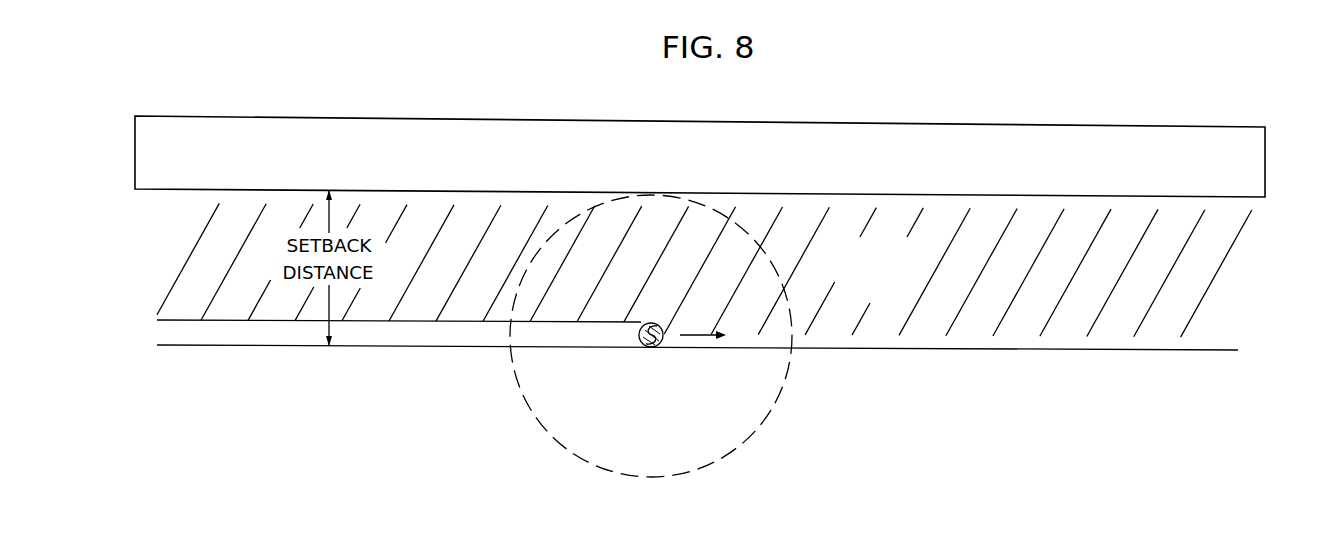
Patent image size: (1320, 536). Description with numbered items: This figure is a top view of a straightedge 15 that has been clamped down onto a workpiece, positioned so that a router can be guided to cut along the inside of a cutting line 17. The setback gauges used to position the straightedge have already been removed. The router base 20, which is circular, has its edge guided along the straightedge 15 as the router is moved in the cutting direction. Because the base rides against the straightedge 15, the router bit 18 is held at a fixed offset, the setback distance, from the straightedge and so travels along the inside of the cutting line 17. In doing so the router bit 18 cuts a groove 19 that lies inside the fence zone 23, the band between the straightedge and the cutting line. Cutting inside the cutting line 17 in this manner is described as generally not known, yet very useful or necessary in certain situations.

The straightedge 15 is at (1125, 133).
The cutting line 17 is at (1148, 353).
The router bit 18 is at (645, 348).
The groove 19 is at (457, 332).
The router base 20 is at (760, 425).
The fence zone 23 is at (877, 333).